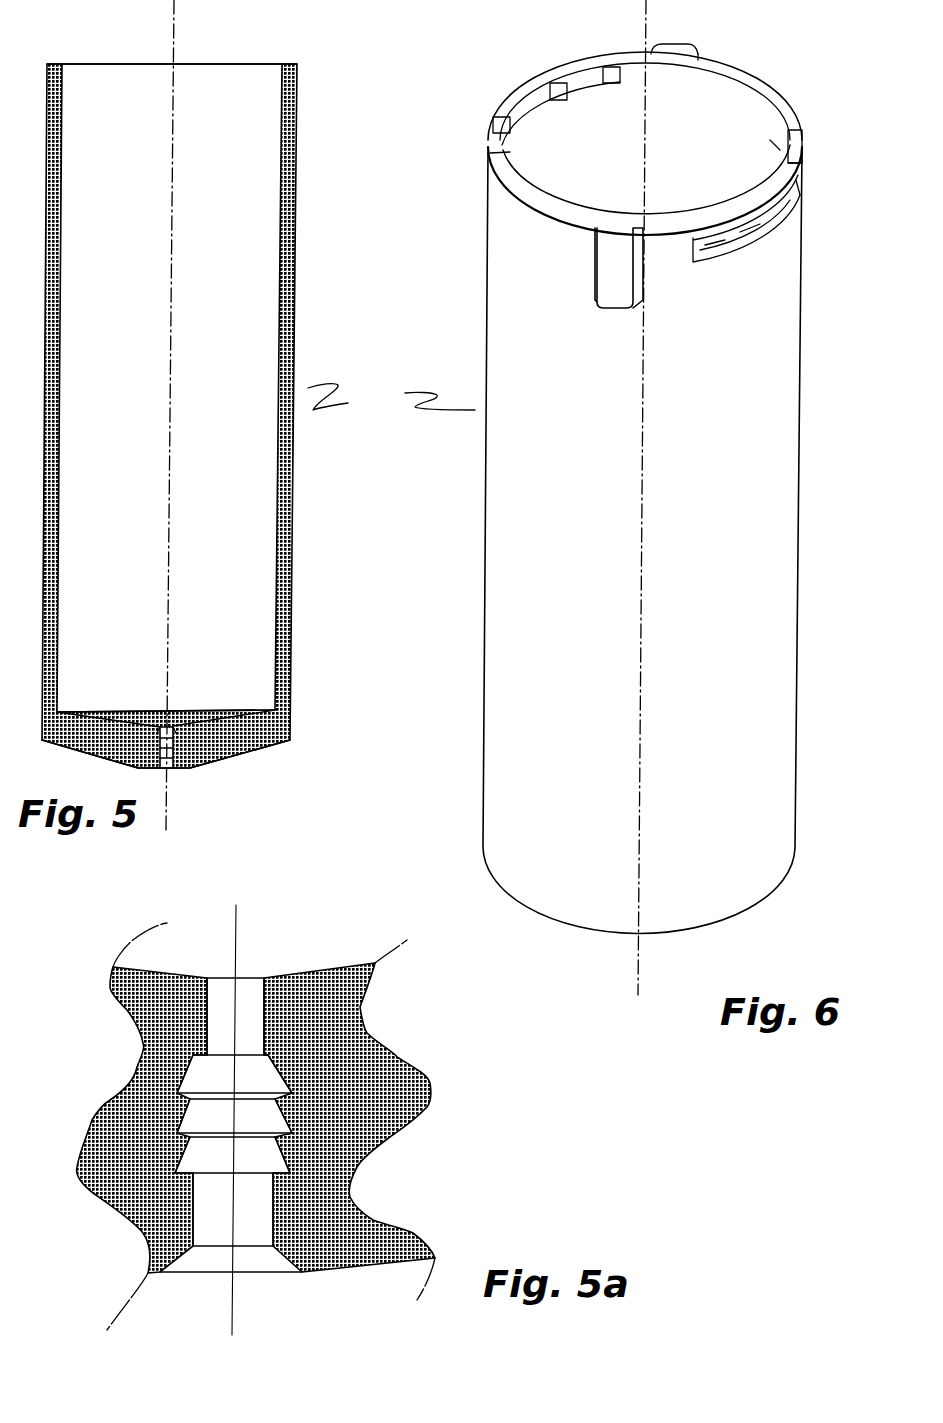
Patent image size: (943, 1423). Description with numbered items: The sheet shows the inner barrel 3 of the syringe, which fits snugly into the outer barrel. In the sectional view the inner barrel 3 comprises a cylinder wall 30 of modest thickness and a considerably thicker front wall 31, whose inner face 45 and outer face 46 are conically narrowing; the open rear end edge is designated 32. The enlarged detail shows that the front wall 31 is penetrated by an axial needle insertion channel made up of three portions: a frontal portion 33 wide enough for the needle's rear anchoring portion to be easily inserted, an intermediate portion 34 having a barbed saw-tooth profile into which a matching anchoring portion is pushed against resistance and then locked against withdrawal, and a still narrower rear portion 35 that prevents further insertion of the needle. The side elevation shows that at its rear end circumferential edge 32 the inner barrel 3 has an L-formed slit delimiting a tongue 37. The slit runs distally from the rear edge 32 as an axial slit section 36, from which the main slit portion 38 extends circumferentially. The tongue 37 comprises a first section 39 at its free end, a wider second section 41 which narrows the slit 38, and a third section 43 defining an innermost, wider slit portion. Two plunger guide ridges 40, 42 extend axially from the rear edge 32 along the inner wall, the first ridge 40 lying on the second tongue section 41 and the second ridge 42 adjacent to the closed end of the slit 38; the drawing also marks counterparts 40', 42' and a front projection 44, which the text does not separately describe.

In FIG. 5, the cylinder wall 30 is at (296, 310).
In FIG. 6, the cylinder wall 30 is at (642, 541).
In FIG. 5, the front wall 31 is at (250, 733).
In FIG. 5A, the front wall 31 is at (420, 1122).
In FIG. 5, the rear end edge 32 is at (197, 60).
In FIG. 6, the rear end edge 32 is at (803, 117).
In FIG. 5A, the frontal portion 33 is at (304, 1268).
In FIG. 5A, the intermediate portion 34 is at (298, 1166).
In FIG. 5A, the rear portion 35 is at (270, 978).
In FIG. 6, the axial slit section 36 is at (486, 138).
In FIG. 6, the tongue 37 is at (794, 173).
In FIG. 6, the main slit portion 38 is at (723, 250).
In FIG. 6, the first section 39 is at (801, 200).
In FIG. 6, the plunger guide ridge 40 is at (824, 109).
In FIG. 6, the raised tab 40' is at (520, 66).
In FIG. 6, the second section 41 is at (757, 227).
In FIG. 6, the plunger guide ridge 42 is at (703, 113).
In FIG. 6, the rear tab 42' is at (579, 47).
In FIG. 6, the third section 43 is at (703, 213).
In FIG. 6, the front tab 44 is at (617, 277).
In FIG. 5, the inner face 45 is at (188, 715).
In FIG. 5, the outer face 46 is at (236, 762).
In FIG. 5, the inner barrel 3 is at (391, 399).
In FIG. 6, the inner barrel 3 is at (440, 401).